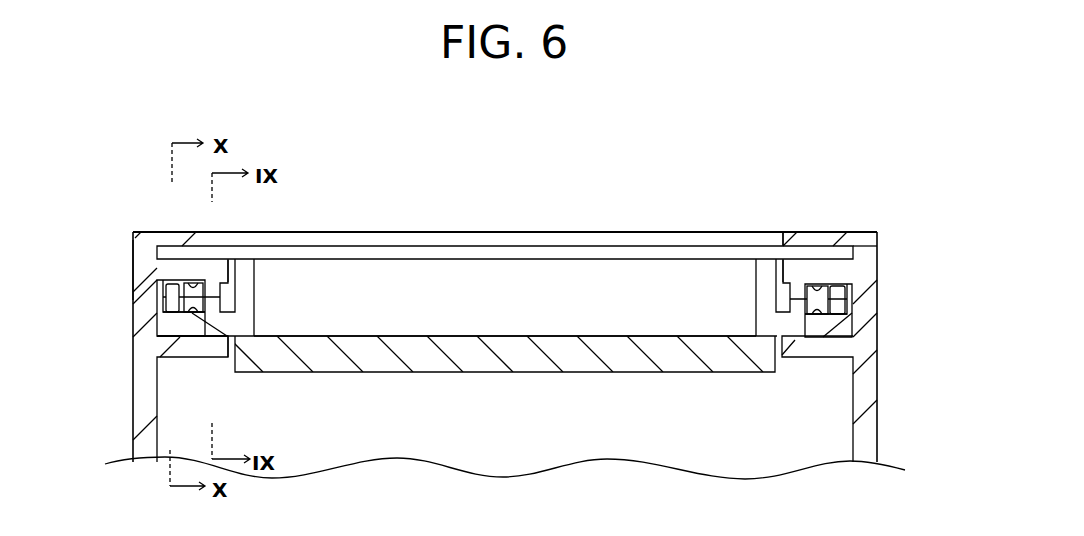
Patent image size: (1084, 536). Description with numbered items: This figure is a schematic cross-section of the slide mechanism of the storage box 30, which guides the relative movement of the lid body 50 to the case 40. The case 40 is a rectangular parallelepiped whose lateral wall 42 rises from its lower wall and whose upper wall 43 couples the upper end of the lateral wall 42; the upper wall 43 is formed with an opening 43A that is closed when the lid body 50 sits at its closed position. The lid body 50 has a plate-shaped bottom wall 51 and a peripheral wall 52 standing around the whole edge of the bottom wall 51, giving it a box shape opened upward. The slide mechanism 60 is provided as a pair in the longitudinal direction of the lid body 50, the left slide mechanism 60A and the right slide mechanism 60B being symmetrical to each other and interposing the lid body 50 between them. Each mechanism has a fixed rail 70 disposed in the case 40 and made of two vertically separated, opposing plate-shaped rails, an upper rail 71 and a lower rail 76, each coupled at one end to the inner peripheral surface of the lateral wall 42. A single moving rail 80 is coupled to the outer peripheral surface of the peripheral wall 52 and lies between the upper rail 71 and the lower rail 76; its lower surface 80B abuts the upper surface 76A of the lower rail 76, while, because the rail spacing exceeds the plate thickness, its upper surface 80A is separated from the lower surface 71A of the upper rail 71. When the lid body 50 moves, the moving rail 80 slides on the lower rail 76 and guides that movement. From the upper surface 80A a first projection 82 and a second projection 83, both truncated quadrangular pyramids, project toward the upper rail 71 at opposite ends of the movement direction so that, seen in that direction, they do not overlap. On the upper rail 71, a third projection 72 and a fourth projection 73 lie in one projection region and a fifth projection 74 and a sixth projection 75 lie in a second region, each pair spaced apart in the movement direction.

The storage box 30 is at (874, 179).
The case 40 is at (823, 242).
The lateral wall 42 is at (134, 236).
The upper wall 43 is at (793, 240).
The opening 43A is at (782, 236).
The lid body 50 is at (478, 362).
The bottom wall 51 is at (505, 336).
The peripheral wall 52 is at (240, 292).
The slide mechanism 60 is at (505, 353).
The slide mechanism 60A is at (260, 384).
The slide mechanism 60B is at (759, 395).
The fixed rail 70 is at (505, 311).
The upper rail 71 is at (892, 239).
The lower surface 71A is at (200, 283).
The third projection 72 is at (266, 247).
The fourth projection 73 is at (505, 234).
The fifth projection 74 is at (156, 288).
The sixth projection 75 is at (506, 293).
The lower rail 76 is at (150, 392).
The upper surface 76A is at (167, 348).
The moving rail 80 is at (218, 322).
The upper surface 80A is at (190, 314).
The lower surface 80B is at (170, 342).
The first projection 82 is at (236, 298).
The second projection 83 is at (157, 306).